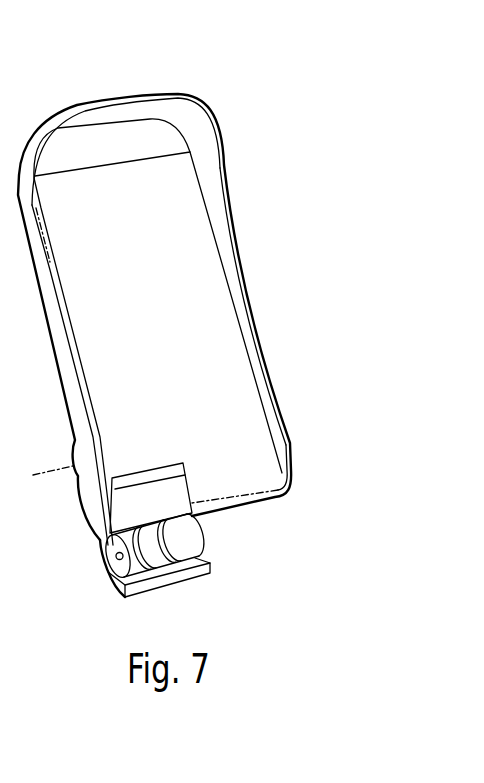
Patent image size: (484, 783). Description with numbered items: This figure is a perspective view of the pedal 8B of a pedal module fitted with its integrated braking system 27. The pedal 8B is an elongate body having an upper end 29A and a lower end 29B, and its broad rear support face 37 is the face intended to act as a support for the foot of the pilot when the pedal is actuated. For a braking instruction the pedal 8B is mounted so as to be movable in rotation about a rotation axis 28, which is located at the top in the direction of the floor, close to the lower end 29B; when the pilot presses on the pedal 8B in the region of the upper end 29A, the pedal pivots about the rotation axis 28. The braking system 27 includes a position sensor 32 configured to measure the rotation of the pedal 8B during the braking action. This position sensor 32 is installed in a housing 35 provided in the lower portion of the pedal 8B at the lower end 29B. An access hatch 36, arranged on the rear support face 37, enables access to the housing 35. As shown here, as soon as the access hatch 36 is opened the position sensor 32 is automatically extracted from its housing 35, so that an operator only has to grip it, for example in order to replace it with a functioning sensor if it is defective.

The pedal 8B is at (238, 260).
The upper end of the pedal 29A is at (236, 130).
The rotation axis 28 is at (287, 417).
The lower end of the pedal 29B is at (313, 484).
The rear support face 37 is at (196, 343).
The housing 35 is at (120, 511).
The position sensor 32 is at (200, 545).
The access hatch 36 is at (177, 583).
The integrated braking system 27 is at (82, 578).